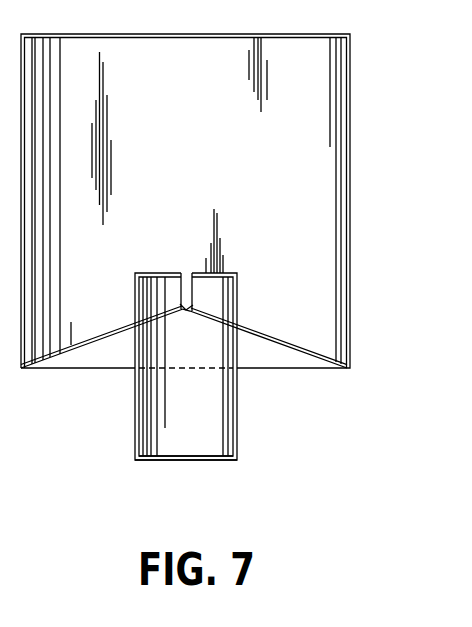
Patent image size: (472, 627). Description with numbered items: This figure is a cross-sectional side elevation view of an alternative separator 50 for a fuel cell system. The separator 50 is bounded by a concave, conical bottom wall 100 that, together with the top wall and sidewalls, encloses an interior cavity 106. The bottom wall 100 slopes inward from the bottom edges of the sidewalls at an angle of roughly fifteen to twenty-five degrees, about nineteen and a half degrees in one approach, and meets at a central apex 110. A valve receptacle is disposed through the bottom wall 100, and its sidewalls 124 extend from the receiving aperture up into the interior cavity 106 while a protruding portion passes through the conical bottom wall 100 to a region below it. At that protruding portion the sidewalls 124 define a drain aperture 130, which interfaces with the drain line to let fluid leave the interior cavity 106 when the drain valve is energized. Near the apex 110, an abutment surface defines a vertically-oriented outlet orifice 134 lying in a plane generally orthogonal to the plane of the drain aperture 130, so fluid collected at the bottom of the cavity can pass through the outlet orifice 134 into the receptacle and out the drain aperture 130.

The separator 50 is at (367, 180).
The bottom wall 100 is at (100, 343).
The interior cavity 106 is at (198, 156).
The apex 110 is at (182, 301).
The sidewalls of the valve receptacle 124 is at (238, 418).
The drain aperture 130 is at (180, 461).
The outlet orifice 134 is at (182, 272).